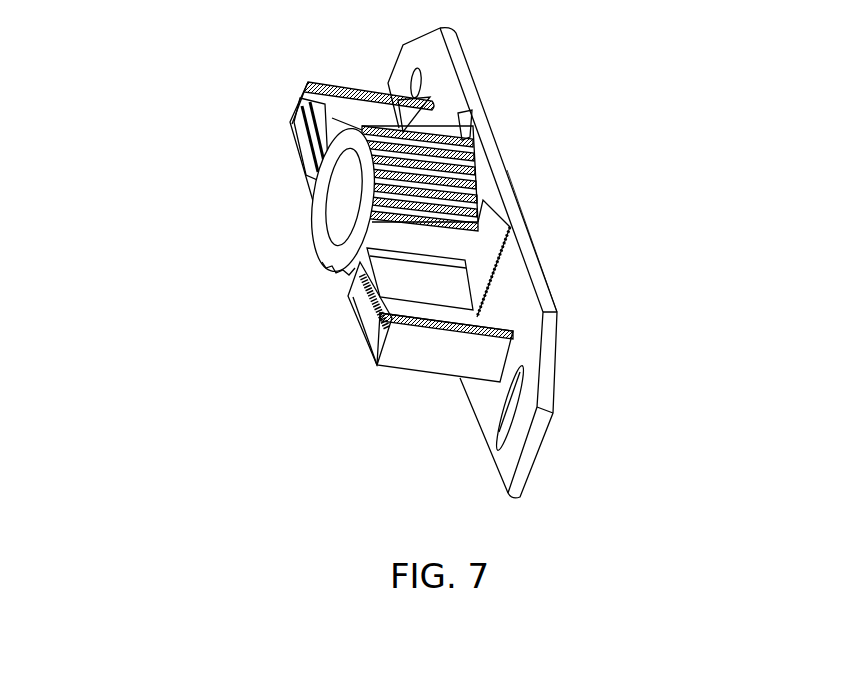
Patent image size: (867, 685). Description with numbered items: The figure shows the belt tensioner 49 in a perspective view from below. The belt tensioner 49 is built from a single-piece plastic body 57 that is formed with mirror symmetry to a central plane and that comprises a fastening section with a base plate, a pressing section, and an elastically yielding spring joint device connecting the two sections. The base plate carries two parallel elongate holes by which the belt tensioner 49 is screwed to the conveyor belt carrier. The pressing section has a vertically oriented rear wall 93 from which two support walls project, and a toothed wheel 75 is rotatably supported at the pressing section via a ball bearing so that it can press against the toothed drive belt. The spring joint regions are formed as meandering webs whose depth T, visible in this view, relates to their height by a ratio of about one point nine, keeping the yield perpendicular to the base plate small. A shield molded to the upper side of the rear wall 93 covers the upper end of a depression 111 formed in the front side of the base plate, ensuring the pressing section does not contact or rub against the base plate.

The belt tensioner 49 is at (157, 167).
The plastic body 57 is at (667, 337).
The toothed wheel 75 is at (328, 247).
The rear wall 93 is at (485, 198).
The depression 111 is at (510, 215).
The depth T is at (456, 282).